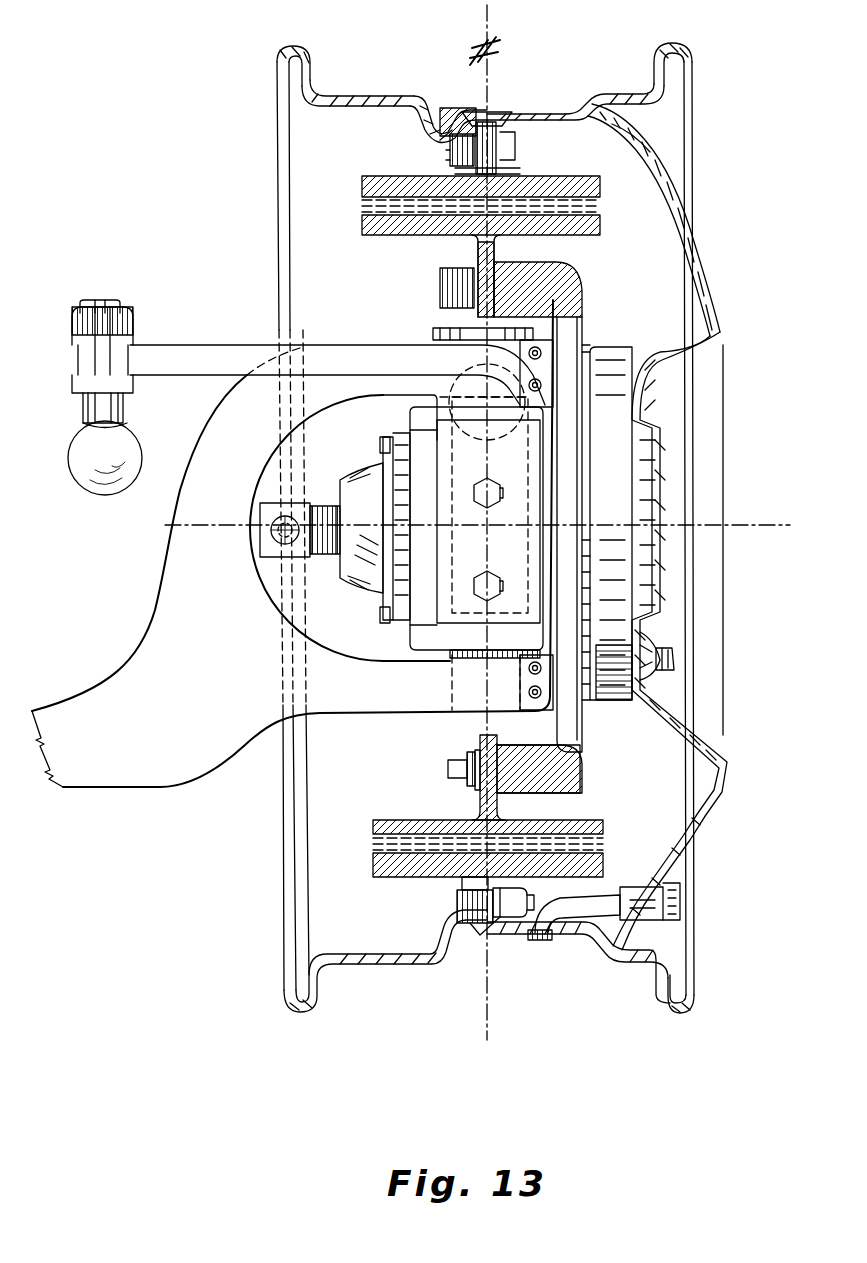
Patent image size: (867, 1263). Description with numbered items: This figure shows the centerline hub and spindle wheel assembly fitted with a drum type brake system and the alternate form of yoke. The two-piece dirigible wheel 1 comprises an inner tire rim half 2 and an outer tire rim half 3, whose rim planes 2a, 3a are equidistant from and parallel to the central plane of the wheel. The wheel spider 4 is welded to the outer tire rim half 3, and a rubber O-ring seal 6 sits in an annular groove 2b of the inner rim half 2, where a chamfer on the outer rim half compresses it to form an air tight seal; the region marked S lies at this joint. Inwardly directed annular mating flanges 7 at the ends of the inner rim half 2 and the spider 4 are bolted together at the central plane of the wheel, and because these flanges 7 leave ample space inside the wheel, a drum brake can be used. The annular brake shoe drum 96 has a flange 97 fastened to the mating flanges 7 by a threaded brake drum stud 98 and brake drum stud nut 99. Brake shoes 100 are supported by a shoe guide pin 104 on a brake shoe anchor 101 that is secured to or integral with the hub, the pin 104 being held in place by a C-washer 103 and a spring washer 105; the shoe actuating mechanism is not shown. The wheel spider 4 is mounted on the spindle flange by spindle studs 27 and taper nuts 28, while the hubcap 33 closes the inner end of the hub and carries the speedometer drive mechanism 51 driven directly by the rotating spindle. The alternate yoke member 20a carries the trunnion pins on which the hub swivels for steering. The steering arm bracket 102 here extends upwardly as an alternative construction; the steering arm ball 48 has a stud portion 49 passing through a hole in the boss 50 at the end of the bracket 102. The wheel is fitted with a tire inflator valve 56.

The dirigible wheel 1 is at (277, 173).
The inner tire rim half 2 is at (363, 100).
The wheel rim 2a is at (283, 50).
The annular groove 2b is at (430, 130).
The outer tire rim half 3 is at (547, 110).
The wheel rim 3a is at (680, 53).
The wheel spider 4 is at (613, 107).
The spacer S is at (627, 142).
The rubber O-ring seal 6 is at (440, 113).
The annular mating flange 7 is at (467, 110).
The flange 97 is at (463, 160).
The annular brake shoe drum 96 is at (583, 180).
The brake shoe 100 is at (573, 223).
The brake shoe anchor 101 is at (573, 290).
The steering arm bracket 102 is at (187, 363).
The stud portion 49 is at (100, 303).
The boss 50 is at (133, 390).
The steering arm ball 48 is at (97, 463).
The hubcap 33 is at (360, 487).
The speedometer drive mechanism 51 is at (297, 537).
The alternate yoke member 20a is at (250, 652).
The spindle stud 27 is at (670, 657).
The taper nut 28 is at (660, 670).
The C-washer 103 is at (480, 740).
The shoe guide pin 104 is at (450, 765).
The spring washer 105 is at (466, 782).
The threaded brake drum stud 98 is at (470, 910).
The brake drum stud nut 99 is at (507, 917).
The tire inflator valve 56 is at (627, 903).